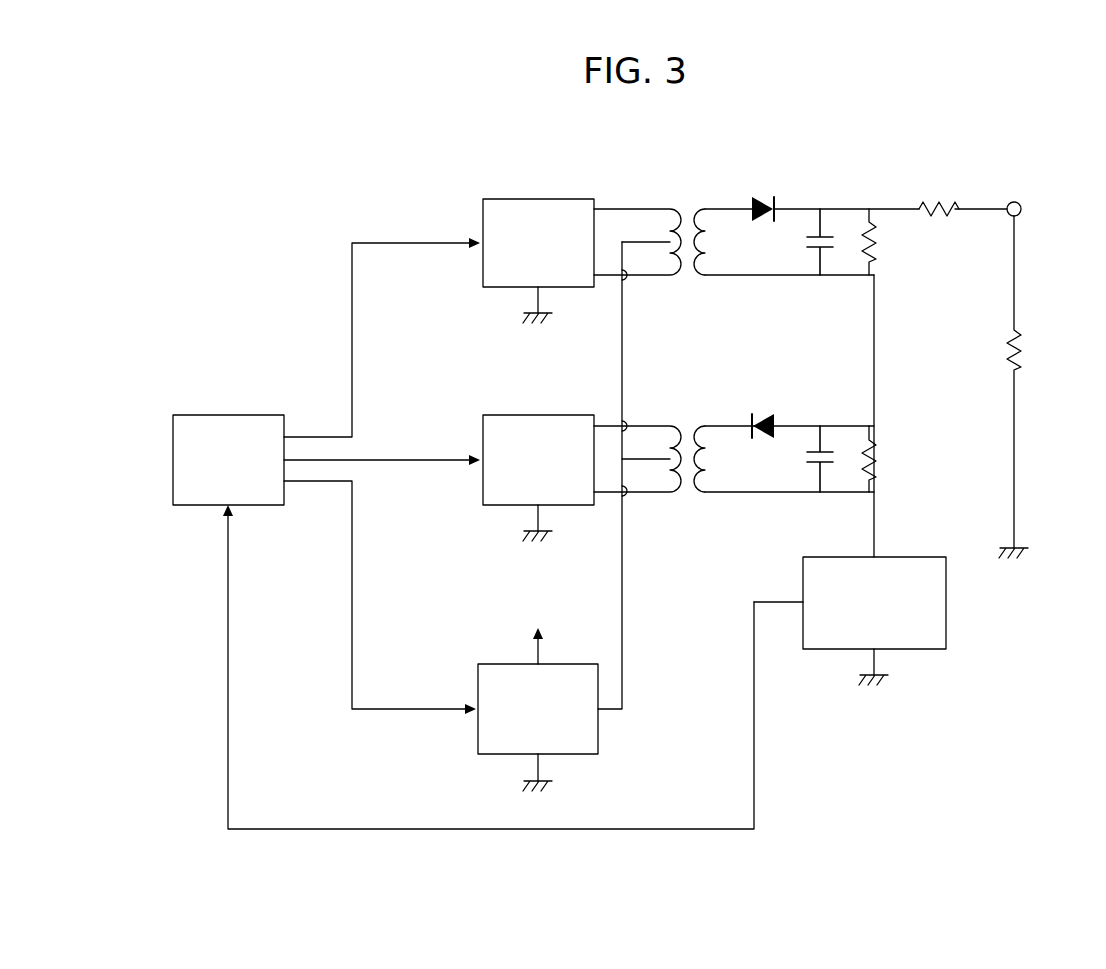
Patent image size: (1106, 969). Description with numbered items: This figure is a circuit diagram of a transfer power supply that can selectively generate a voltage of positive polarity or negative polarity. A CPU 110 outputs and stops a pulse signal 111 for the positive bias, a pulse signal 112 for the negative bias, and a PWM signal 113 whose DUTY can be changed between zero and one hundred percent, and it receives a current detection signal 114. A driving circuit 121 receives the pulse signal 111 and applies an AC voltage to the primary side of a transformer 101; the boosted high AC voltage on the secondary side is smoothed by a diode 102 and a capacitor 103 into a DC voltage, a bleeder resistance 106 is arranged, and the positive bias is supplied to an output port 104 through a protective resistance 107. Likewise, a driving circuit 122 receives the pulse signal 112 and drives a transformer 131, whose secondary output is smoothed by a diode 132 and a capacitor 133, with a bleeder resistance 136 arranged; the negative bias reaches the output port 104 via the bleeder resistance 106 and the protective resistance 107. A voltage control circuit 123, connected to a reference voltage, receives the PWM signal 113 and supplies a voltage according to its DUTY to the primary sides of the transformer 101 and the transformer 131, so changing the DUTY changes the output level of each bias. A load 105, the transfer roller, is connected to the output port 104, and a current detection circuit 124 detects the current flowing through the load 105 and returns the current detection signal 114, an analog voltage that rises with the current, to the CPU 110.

The CPU 110 is at (218, 414).
The pulse signal 111 is at (406, 241).
The pulse signal 112 is at (406, 457).
The PWM signal 113 is at (406, 705).
The current detection signal 114 is at (276, 826).
The driving circuit 121 is at (535, 198).
The driving circuit 122 is at (535, 414).
The voltage control circuit 123 is at (576, 664).
The current detection circuit 124 is at (946, 608).
The transformer 101 is at (682, 203).
The diode 102 is at (763, 193).
The capacitor 103 is at (806, 242).
The output port 104 is at (1011, 196).
The load 105 is at (1022, 350).
The bleeder resistance 106 is at (878, 244).
The protective resistance 107 is at (938, 196).
The transformer 131 is at (682, 421).
The diode 132 is at (763, 412).
The capacitor 133 is at (806, 457).
The bleeder resistance 136 is at (878, 462).